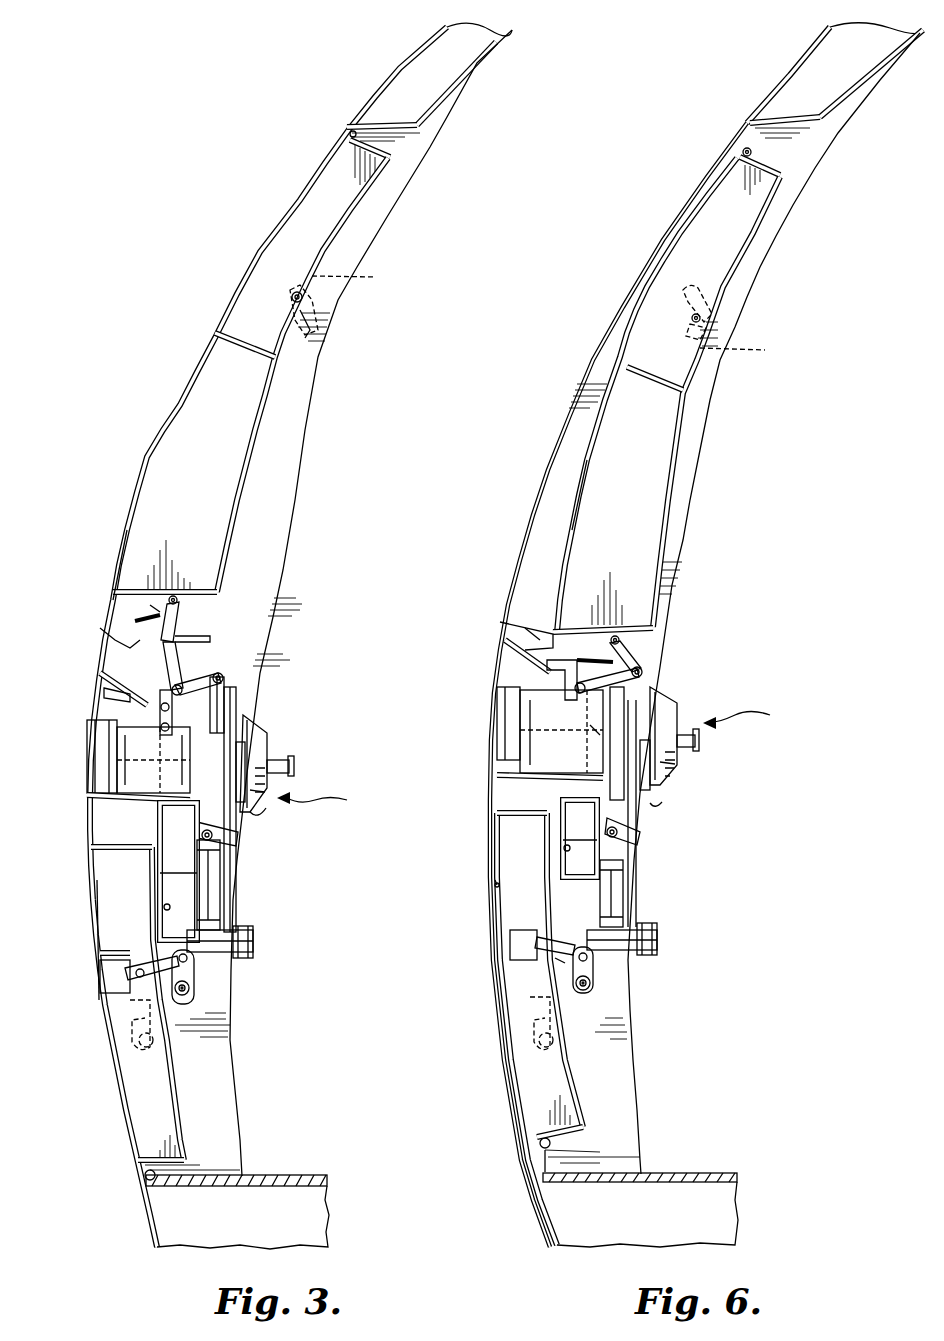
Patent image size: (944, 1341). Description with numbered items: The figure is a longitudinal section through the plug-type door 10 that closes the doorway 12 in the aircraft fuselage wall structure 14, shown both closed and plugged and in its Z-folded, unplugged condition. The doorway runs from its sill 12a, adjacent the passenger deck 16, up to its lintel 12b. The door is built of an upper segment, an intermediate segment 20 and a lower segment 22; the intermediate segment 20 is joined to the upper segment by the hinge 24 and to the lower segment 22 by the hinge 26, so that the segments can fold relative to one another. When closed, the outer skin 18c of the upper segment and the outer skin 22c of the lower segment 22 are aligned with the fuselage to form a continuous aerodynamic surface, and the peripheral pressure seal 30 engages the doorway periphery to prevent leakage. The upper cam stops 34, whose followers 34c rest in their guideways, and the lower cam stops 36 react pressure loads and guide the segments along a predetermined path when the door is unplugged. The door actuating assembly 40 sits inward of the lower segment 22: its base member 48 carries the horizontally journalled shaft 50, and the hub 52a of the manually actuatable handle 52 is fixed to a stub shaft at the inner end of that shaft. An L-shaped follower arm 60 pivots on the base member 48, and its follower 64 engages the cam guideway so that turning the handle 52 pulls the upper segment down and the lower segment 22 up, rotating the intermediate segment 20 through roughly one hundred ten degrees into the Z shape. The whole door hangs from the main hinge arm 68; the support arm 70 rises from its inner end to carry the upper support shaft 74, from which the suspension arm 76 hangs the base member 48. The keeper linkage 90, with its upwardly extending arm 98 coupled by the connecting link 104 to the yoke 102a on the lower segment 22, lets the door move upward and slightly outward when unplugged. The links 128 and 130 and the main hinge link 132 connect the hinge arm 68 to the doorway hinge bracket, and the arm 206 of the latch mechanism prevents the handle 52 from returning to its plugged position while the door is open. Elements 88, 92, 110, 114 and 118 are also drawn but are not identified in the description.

In FIG. 3, the door 10 is at (150, 430).
In FIG. 6, the door 10 is at (582, 460).
In FIG. 6, the doorway 12 is at (700, 170).
In FIG. 6, the sill 12a is at (537, 1167).
In FIG. 3, the lintel 12b is at (347, 127).
In FIG. 6, the lintel 12b is at (740, 135).
In FIG. 3, the wall structure 14 is at (397, 70).
In FIG. 6, the wall structure 14 is at (778, 72).
In FIG. 3, the passenger deck 16 is at (300, 1175).
In FIG. 6, the passenger deck 16 is at (708, 1172).
In FIG. 3, the outer skin of upper segment 18c is at (255, 250).
In FIG. 6, the outer skin of upper segment 18c is at (632, 341).
In FIG. 3, the intermediate segment 20 is at (85, 637).
In FIG. 6, the intermediate segment 20 is at (550, 630).
In FIG. 3, the lower segment 22 is at (86, 893).
In FIG. 6, the lower segment 22 is at (486, 838).
In FIG. 3, the outer skin of lower segment 22c is at (90, 866).
In FIG. 6, the outer skin of lower segment 22c is at (495, 885).
In FIG. 3, the hinge 24 is at (100, 672).
In FIG. 6, the hinge 24 is at (530, 652).
In FIG. 3, the hinge 26 is at (160, 605).
In FIG. 6, the hinge 26 is at (530, 630).
In FIG. 3, the fluid pressure seal 30 is at (360, 136).
In FIG. 6, the fluid pressure seal 30 is at (752, 152).
In FIG. 3, the upper cam stop 34 is at (315, 318).
In FIG. 6, the upper cam stop 34 is at (705, 300).
In FIG. 3, the follower 34c is at (360, 276).
In FIG. 6, the follower 34c is at (749, 349).
In FIG. 3, the lower cam stop 36 is at (130, 1040).
In FIG. 6, the lower cam stop 36 is at (535, 1042).
In FIG. 3, the door actuating assembly 40 is at (321, 799).
In FIG. 6, the door actuating assembly 40 is at (749, 716).
In FIG. 3, the base member 48 is at (100, 722).
In FIG. 3, the shaft 50 is at (265, 790).
In FIG. 6, the shaft 50 is at (672, 762).
In FIG. 3, the handle 52 is at (296, 766).
In FIG. 6, the handle 52 is at (700, 740).
In FIG. 3, the hub 52a is at (262, 735).
In FIG. 6, the hub 52a is at (670, 718).
In FIG. 3, the follower arm 60 is at (232, 762).
In FIG. 6, the follower arm 60 is at (650, 782).
In FIG. 3, the follower 64 is at (262, 812).
In FIG. 6, the follower 64 is at (648, 808).
In FIG. 3, the main hinge arm 68 is at (170, 910).
In FIG. 6, the main hinge arm 68 is at (575, 848).
In FIG. 3, the support arm 70 is at (110, 762).
In FIG. 6, the support arm 70 is at (590, 732).
In FIG. 3, the upper support shaft 74 is at (162, 695).
In FIG. 6, the upper support shaft 74 is at (590, 710).
In FIG. 3, the suspension arm 76 is at (105, 693).
In FIG. 6, the suspension arm 76 is at (540, 668).
In FIG. 3, the cylinder 88 is at (230, 675).
In FIG. 6, the cylinder 88 is at (617, 743).
In FIG. 3, the keeper linkage 90 is at (238, 698).
In FIG. 6, the keeper linkage 90 is at (640, 695).
In FIG. 3, the pivot 92 is at (195, 995).
In FIG. 6, the pivot 92 is at (595, 998).
In FIG. 3, the upwardly extending arm 98 is at (195, 975).
In FIG. 6, the upwardly extending arm 98 is at (595, 970).
In FIG. 3, the yoke 102a is at (100, 958).
In FIG. 6, the yoke 102a is at (510, 943).
In FIG. 3, the connecting link 104 is at (140, 978).
In FIG. 6, the connecting link 104 is at (560, 963).
In FIG. 3, the link 110 is at (200, 665).
In FIG. 6, the link 110 is at (650, 672).
In FIG. 3, the lever 114 is at (210, 620).
In FIG. 6, the lever 114 is at (645, 650).
In FIG. 3, the pivot pin 118 is at (190, 598).
In FIG. 3, the link 128 is at (255, 936).
In FIG. 6, the link 128 is at (660, 930).
In FIG. 3, the link 130 is at (255, 950).
In FIG. 6, the link 130 is at (660, 945).
In FIG. 3, the main hinge link 132 is at (222, 900).
In FIG. 6, the main hinge link 132 is at (625, 895).
In FIG. 3, the arm 206 is at (240, 840).
In FIG. 6, the arm 206 is at (640, 840).